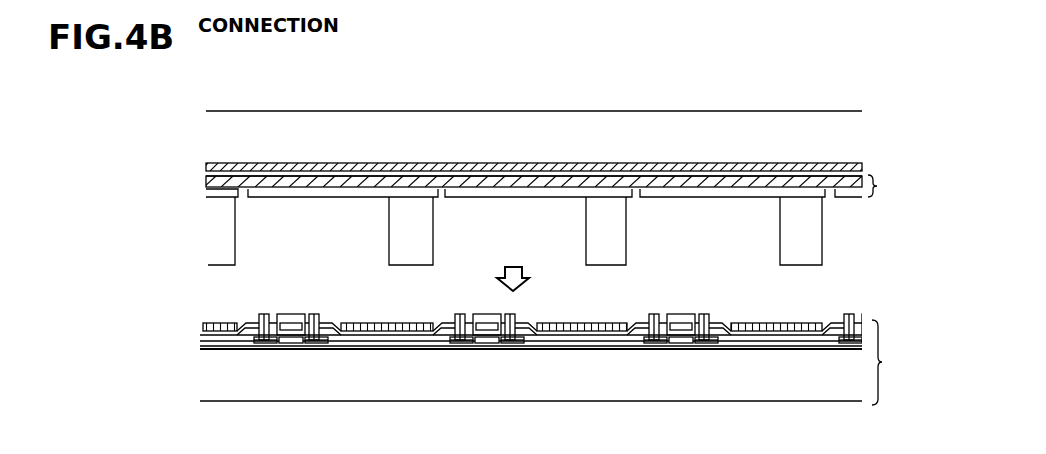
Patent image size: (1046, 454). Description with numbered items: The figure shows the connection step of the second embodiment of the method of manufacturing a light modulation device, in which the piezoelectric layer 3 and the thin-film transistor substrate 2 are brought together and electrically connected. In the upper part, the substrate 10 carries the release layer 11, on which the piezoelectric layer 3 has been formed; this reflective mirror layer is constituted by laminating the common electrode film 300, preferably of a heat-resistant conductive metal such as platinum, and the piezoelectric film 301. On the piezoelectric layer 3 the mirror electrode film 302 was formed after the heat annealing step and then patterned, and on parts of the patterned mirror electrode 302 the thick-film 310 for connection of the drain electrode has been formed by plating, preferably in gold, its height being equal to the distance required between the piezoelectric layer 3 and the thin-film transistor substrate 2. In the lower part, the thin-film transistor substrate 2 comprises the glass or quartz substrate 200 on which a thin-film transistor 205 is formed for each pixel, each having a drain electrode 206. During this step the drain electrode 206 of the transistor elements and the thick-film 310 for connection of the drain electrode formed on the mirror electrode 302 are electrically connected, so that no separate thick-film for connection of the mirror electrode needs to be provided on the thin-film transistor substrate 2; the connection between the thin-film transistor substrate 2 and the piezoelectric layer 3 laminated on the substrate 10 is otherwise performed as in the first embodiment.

The thin-film transistor substrate 2 is at (887, 362).
The piezoelectric layer 3 is at (883, 184).
The substrate 10 is at (696, 128).
The release layer 11 is at (650, 164).
The glass or quartz substrate 200 is at (603, 386).
The thin-film transistor 205 is at (483, 346).
The drain electrode 206 is at (400, 331).
The common electrode film 300 is at (562, 174).
The piezoelectric film 301 is at (549, 188).
The mirror electrode film 302 is at (466, 197).
The thick-film for connection of the drain electrode 310 is at (620, 217).